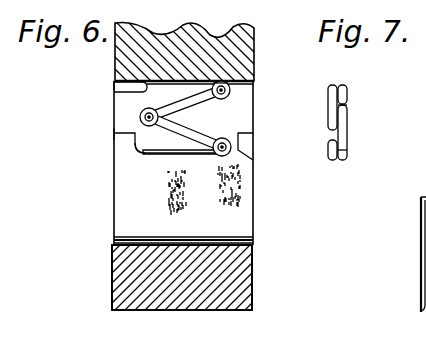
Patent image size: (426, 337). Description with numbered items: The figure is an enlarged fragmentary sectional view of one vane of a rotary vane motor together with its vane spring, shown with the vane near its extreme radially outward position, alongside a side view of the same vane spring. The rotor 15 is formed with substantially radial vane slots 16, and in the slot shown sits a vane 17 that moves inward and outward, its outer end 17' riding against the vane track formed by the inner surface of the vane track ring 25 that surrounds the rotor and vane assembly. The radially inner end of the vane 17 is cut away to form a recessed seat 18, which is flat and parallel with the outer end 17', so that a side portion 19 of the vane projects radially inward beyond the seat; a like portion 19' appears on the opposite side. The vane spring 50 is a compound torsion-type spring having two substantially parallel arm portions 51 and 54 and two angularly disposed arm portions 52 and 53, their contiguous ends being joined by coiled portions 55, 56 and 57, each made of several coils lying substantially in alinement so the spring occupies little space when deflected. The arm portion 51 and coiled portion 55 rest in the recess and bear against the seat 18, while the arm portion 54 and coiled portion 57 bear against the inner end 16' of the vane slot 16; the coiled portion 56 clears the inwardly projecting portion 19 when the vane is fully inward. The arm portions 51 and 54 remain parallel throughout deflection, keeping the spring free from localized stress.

In FIG. 6, the rotor 15 is at (244, 58).
In FIG. 6, the vane slot 16 is at (165, 163).
In FIG. 6, the inner end or wall of vane slot 16' is at (89, 77).
In FIG. 6, the vane 17 is at (202, 225).
In FIG. 6, the outer end of vane 17' is at (183, 234).
In FIG. 6, the recessed seat 18 is at (188, 157).
In FIG. 6, the inwardly projecting side portion of vane 19 is at (182, 147).
In FIG. 6, the channel lip corner 19' is at (181, 167).
In FIG. 6, the vane track ring 25 is at (243, 279).
In FIG. 6, the vane spring 50 is at (212, 130).
In FIG. 7, the vane spring 50 is at (349, 150).
In FIG. 6, the arm portion 51 is at (158, 154).
In FIG. 6, the arm portion 52 is at (168, 116).
In FIG. 7, the arm portion 52 is at (348, 131).
In FIG. 6, the arm portion 53 is at (221, 81).
In FIG. 7, the arm portion 53 is at (330, 103).
In FIG. 6, the arm portion 54 is at (124, 88).
In FIG. 6, the coiled portion 55 is at (236, 132).
In FIG. 7, the coiled portion 55 is at (331, 159).
In FIG. 6, the coiled portion 56 is at (123, 135).
In FIG. 7, the coiled portion 56 is at (348, 117).
In FIG. 6, the coiled portion 57 is at (231, 90).
In FIG. 7, the coiled portion 57 is at (344, 89).